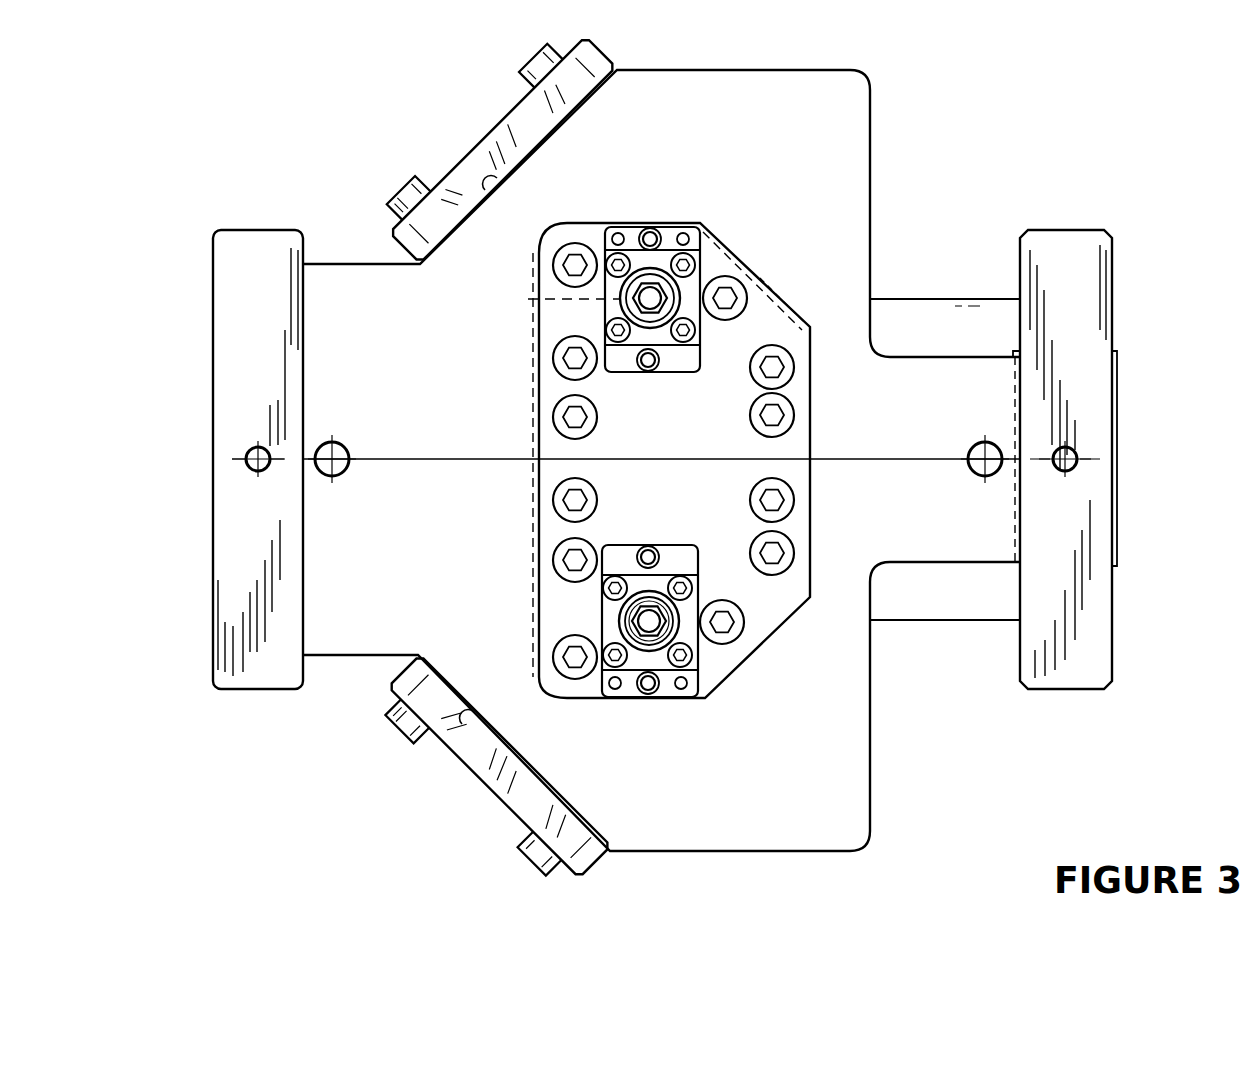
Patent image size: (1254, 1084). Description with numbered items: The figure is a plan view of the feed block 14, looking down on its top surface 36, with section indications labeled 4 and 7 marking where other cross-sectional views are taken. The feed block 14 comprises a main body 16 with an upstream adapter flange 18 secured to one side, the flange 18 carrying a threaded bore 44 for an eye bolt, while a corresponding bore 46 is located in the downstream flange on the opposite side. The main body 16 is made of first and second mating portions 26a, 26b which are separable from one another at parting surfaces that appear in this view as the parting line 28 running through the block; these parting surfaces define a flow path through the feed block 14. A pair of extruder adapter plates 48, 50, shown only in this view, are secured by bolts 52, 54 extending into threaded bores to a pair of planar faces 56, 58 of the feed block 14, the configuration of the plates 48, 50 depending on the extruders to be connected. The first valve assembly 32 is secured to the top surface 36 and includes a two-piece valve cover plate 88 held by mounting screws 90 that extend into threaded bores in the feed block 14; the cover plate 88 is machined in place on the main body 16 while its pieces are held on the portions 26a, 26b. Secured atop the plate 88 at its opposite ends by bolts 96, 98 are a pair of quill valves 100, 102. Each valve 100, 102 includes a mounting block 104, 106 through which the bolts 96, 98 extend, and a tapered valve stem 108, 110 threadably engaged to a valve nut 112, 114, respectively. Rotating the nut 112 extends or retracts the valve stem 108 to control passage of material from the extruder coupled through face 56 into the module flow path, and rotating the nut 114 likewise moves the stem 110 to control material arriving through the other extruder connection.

The section line 4- 4 is at (658, 30).
The section line 7- 7 is at (203, 457).
The feed block 14 is at (981, 205).
The main body 16 is at (371, 653).
The upstream adapter flange 18 is at (257, 678).
The first mating portion 26a is at (343, 274).
The second mating portion 26b is at (325, 638).
The parting line 28 is at (403, 458).
The first valve assembly 32 is at (727, 252).
The top surface 36 is at (853, 178).
The bore 44 is at (262, 470).
The bore 46 is at (1068, 470).
The extruder adapter plate 48 is at (465, 155).
The extruder adapter plate 50 is at (478, 777).
The bolt 52 is at (398, 186).
The bolt 54 is at (395, 736).
The planar face 56 is at (493, 182).
The planar face 58 is at (463, 720).
The valve cover plate 88 is at (790, 334).
The mounting screws 90 is at (556, 264).
The bolts 96 is at (616, 262).
The bolts 98 is at (615, 579).
The quill valve 100 is at (656, 272).
The quill valve 102 is at (645, 636).
The mounting block 104 is at (647, 270).
The mounting block 106 is at (660, 580).
The tapered valve stem 108 is at (528, 299).
The tapered valve stem 110 is at (662, 692).
The valve nut 112 is at (650, 230).
The valve nut 114 is at (674, 619).